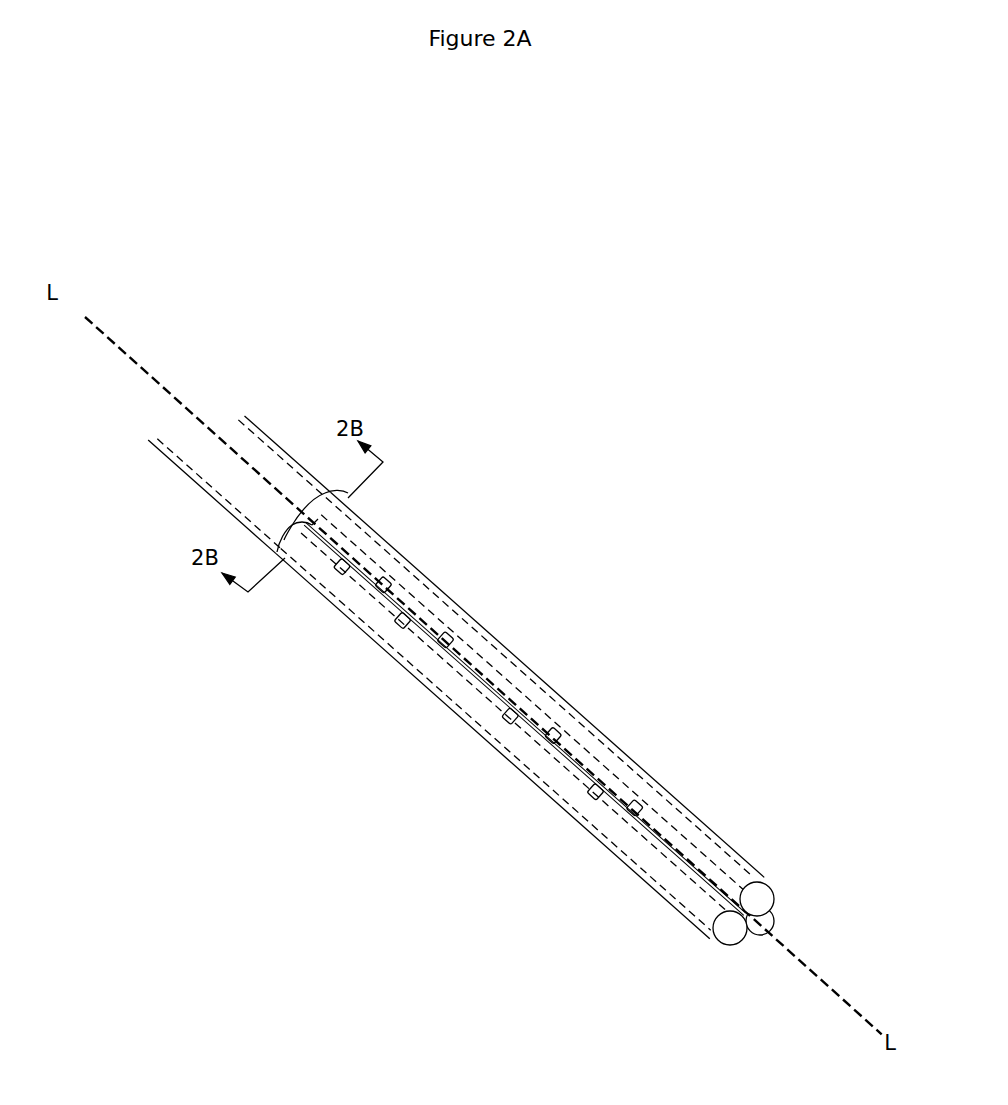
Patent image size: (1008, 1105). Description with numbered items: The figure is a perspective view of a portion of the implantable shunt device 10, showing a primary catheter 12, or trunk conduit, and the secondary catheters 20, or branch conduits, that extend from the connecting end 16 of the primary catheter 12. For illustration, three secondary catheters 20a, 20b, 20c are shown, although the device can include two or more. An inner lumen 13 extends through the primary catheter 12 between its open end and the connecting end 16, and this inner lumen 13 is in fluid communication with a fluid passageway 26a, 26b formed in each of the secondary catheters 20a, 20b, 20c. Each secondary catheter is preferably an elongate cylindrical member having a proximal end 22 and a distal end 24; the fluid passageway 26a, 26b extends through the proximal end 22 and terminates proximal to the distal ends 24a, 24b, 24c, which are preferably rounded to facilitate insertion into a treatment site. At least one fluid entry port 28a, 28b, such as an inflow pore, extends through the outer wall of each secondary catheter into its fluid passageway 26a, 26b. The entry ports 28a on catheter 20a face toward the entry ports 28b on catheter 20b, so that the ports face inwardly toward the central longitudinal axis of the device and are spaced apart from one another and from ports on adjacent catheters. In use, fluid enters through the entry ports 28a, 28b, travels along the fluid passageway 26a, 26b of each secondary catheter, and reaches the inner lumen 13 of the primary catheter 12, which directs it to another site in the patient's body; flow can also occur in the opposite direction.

The implantable shunt device 10 is at (665, 335).
The primary catheter 12 is at (267, 423).
The inner lumen 13 is at (230, 425).
The connecting end 16 is at (284, 577).
The secondary catheters 20 is at (550, 600).
The secondary catheter 20a is at (358, 603).
The secondary catheter 20b is at (490, 655).
The secondary catheter 20c is at (426, 630).
The proximal end 22 is at (400, 492).
The distal end 24 is at (767, 869).
The distal end 24a is at (733, 928).
The distal end 24b is at (765, 898).
The distal end 24c is at (762, 922).
The fluid passageway 26a is at (627, 833).
The fluid passageway 26b is at (608, 767).
The fluid entry ports 28a is at (505, 722).
The fluid entry ports 28b is at (558, 727).